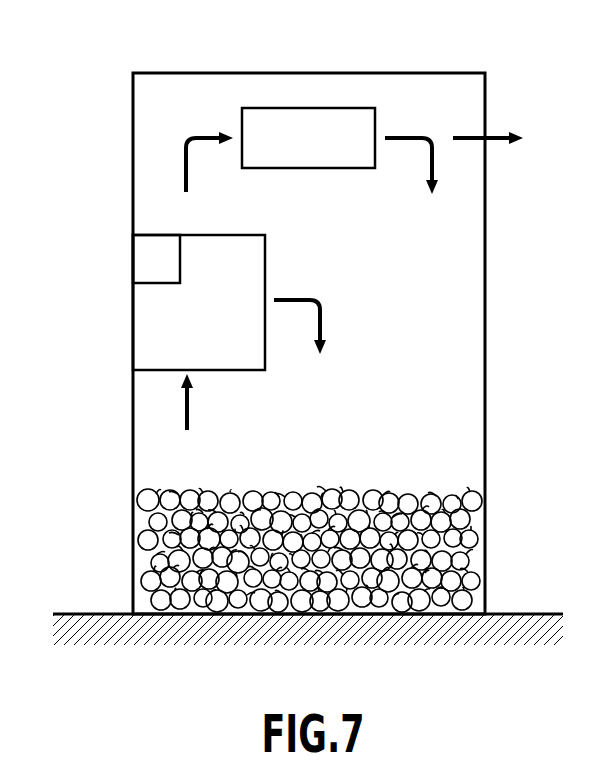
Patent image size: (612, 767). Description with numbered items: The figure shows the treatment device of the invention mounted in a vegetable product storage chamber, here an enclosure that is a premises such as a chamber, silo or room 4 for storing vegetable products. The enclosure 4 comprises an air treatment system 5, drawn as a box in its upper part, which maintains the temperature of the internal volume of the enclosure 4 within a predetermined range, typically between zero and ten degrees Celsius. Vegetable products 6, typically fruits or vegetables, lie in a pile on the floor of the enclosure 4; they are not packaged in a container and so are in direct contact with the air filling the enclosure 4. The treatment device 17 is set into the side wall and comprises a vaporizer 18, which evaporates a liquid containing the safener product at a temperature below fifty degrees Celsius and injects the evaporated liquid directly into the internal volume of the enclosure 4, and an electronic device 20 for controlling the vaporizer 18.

The room 4 is at (487, 276).
The air treatment system 5 is at (305, 116).
The vegetable products 6 is at (420, 492).
The treatment device 17 is at (119, 357).
The vaporizer 18 is at (160, 332).
The electronic device 20 is at (147, 263).